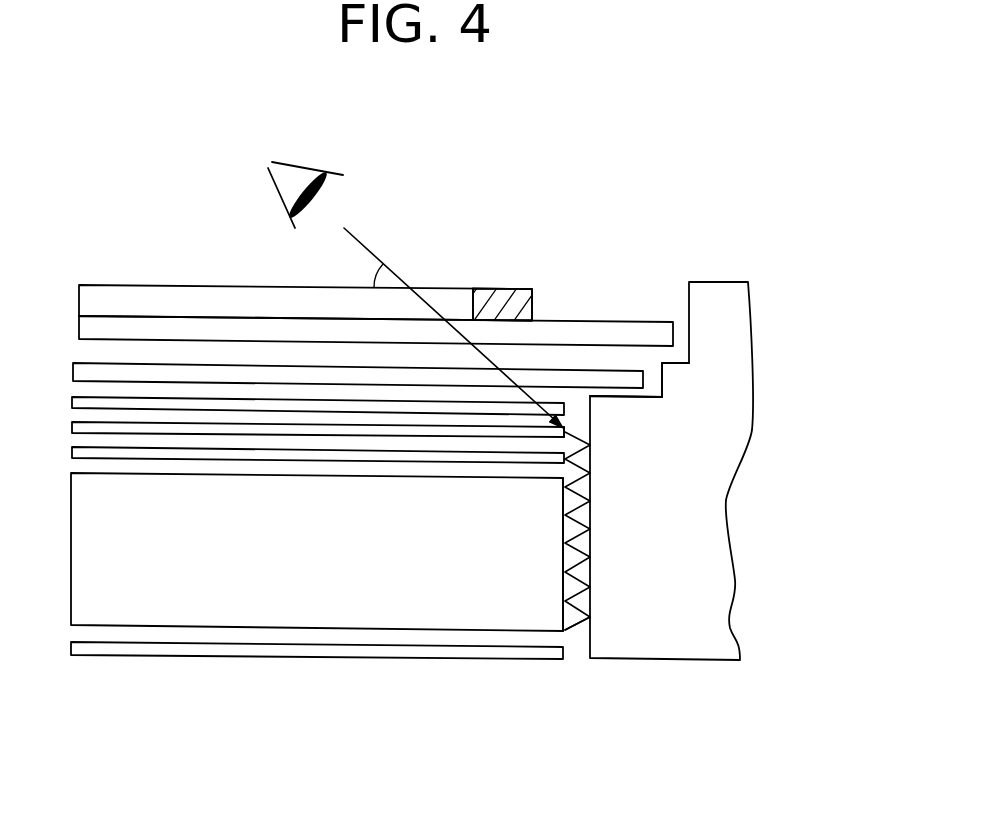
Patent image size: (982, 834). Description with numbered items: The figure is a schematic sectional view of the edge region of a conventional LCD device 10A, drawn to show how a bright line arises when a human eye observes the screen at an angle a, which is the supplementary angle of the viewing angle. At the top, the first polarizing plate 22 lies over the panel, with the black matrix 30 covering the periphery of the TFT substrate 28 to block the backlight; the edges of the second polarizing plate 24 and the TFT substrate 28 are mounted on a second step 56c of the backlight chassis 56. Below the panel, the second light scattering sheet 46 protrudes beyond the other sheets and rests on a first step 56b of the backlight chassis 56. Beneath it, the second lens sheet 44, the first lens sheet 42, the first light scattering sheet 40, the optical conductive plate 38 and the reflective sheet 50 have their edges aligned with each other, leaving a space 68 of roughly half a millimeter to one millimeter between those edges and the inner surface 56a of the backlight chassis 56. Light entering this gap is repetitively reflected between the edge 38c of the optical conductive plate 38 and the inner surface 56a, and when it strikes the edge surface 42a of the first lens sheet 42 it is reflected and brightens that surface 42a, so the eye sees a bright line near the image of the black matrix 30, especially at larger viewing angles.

The conventional LCD device 10A is at (457, 139).
The first polarizing plate 22 is at (455, 297).
The black matrix 30 is at (503, 297).
The second polarizing plate 24 is at (376, 295).
The TFT substrate 28 is at (617, 330).
The second light scattering sheet 46 is at (637, 379).
The second lens sheet 44 is at (273, 413).
The first lens sheet 42 is at (355, 432).
The edge surface of the first lens sheet 42a is at (566, 432).
The first light scattering sheet 40 is at (420, 455).
The optical conductive plate 38 is at (483, 610).
The edge of the optical conductive plate 38c is at (563, 565).
The reflective sheet 50 is at (548, 660).
The backlight chassis 56 is at (710, 458).
The inner surface of the backlight chassis 56a is at (578, 545).
The first step of the backlight chassis 56b is at (646, 398).
The second step of the backlight chassis 56c is at (678, 377).
The space 68 is at (572, 617).